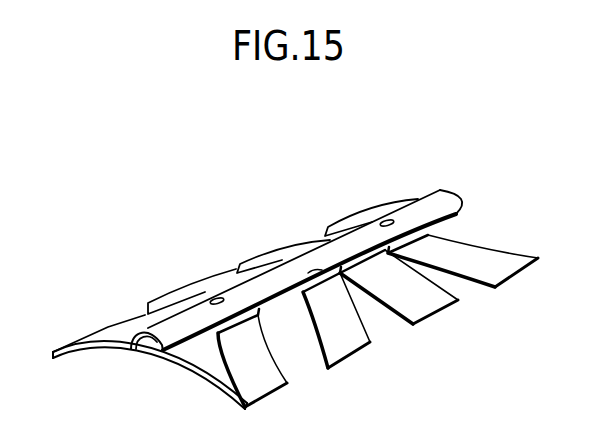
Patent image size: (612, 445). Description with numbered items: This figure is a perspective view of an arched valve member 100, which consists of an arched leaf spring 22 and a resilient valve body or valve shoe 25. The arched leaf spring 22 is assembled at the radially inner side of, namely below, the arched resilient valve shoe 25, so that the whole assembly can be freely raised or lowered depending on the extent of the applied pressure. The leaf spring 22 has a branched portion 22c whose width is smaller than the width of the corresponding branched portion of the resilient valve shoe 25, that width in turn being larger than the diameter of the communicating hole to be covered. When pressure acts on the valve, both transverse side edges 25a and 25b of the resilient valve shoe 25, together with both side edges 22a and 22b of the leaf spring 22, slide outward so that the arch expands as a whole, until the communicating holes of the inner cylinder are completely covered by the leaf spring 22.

The arched valve member 100 is at (460, 187).
The arched leaf spring 22 is at (94, 357).
The side edge of the leaf spring 22a is at (452, 305).
The side edge of the leaf spring 22b is at (237, 264).
The branched portion of the leaf spring 22c is at (140, 353).
The resilient valve body 25 is at (157, 353).
The transverse side edge of the resilient valve member 25a is at (293, 250).
The transverse side edge of the resilient valve member 25b is at (310, 272).